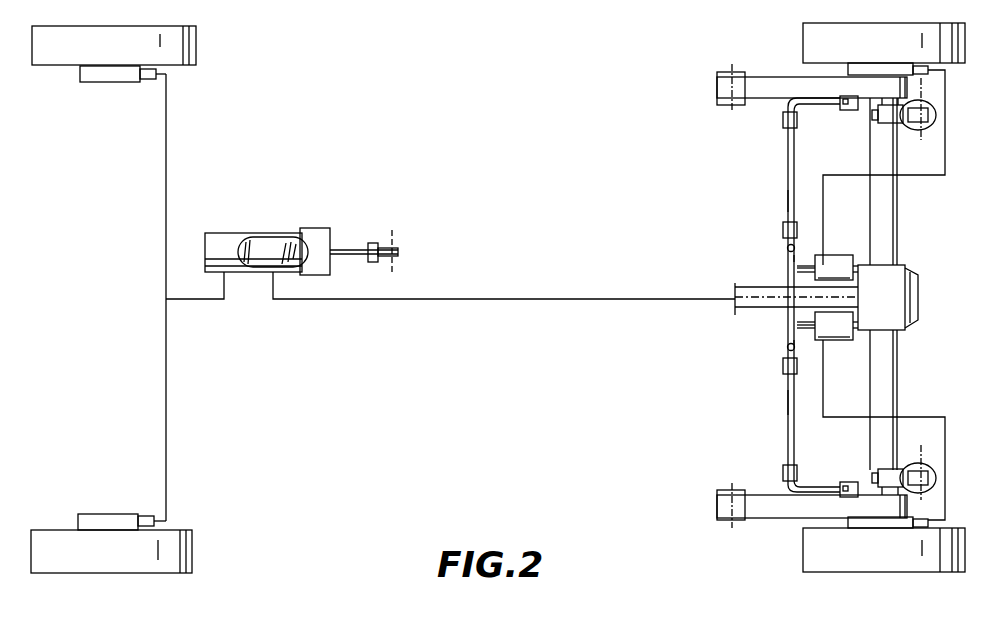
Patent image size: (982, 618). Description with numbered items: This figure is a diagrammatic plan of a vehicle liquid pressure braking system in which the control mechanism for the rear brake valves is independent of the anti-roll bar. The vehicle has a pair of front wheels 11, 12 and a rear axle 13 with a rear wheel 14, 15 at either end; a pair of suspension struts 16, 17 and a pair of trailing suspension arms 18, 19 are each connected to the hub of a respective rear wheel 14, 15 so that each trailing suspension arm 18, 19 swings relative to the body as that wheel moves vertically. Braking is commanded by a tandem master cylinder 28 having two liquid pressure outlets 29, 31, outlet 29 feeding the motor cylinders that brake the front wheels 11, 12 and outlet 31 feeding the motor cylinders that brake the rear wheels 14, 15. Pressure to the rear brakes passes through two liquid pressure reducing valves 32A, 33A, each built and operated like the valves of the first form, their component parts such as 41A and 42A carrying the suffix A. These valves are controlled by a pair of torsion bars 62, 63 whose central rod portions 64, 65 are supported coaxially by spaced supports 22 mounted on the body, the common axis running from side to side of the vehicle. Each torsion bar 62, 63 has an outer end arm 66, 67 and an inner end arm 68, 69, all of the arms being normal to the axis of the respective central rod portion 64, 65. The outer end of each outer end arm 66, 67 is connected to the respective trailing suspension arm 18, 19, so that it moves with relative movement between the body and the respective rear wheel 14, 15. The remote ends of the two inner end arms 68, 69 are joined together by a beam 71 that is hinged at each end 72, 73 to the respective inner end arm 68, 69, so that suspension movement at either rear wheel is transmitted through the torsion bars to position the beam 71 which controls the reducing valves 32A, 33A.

The front wheel 11 is at (184, 43).
The front wheel 12 is at (186, 552).
The rear axle 13 is at (880, 208).
The rear wheel 14 is at (815, 43).
The rear wheel 15 is at (815, 556).
The suspension strut 16 is at (912, 125).
The suspension strut 17 is at (912, 468).
The trailing suspension arm 18 is at (802, 82).
The trailing suspension arm 19 is at (790, 507).
The spaced supports 22 is at (784, 118).
The tandem master cylinder 28 is at (228, 239).
The liquid pressure outlet 29 is at (220, 274).
The liquid pressure outlet 31 is at (268, 273).
The liquid pressure reducing valve 32A is at (827, 267).
The liquid pressure reducing valve 33A is at (827, 326).
The conduit 41A is at (805, 268).
The conduit 42A is at (800, 325).
The torsion bar 62 is at (786, 175).
The torsion bar 63 is at (786, 440).
The central rod portion 64 is at (788, 201).
The central rod portion 65 is at (788, 403).
The outer end arm 66 is at (820, 104).
The outer end arm 67 is at (820, 492).
The inner end arm 68 is at (787, 248).
The inner end arm 69 is at (787, 347).
The beam 71 is at (788, 276).
The hinge 72 is at (795, 247).
The hinge 73 is at (795, 347).